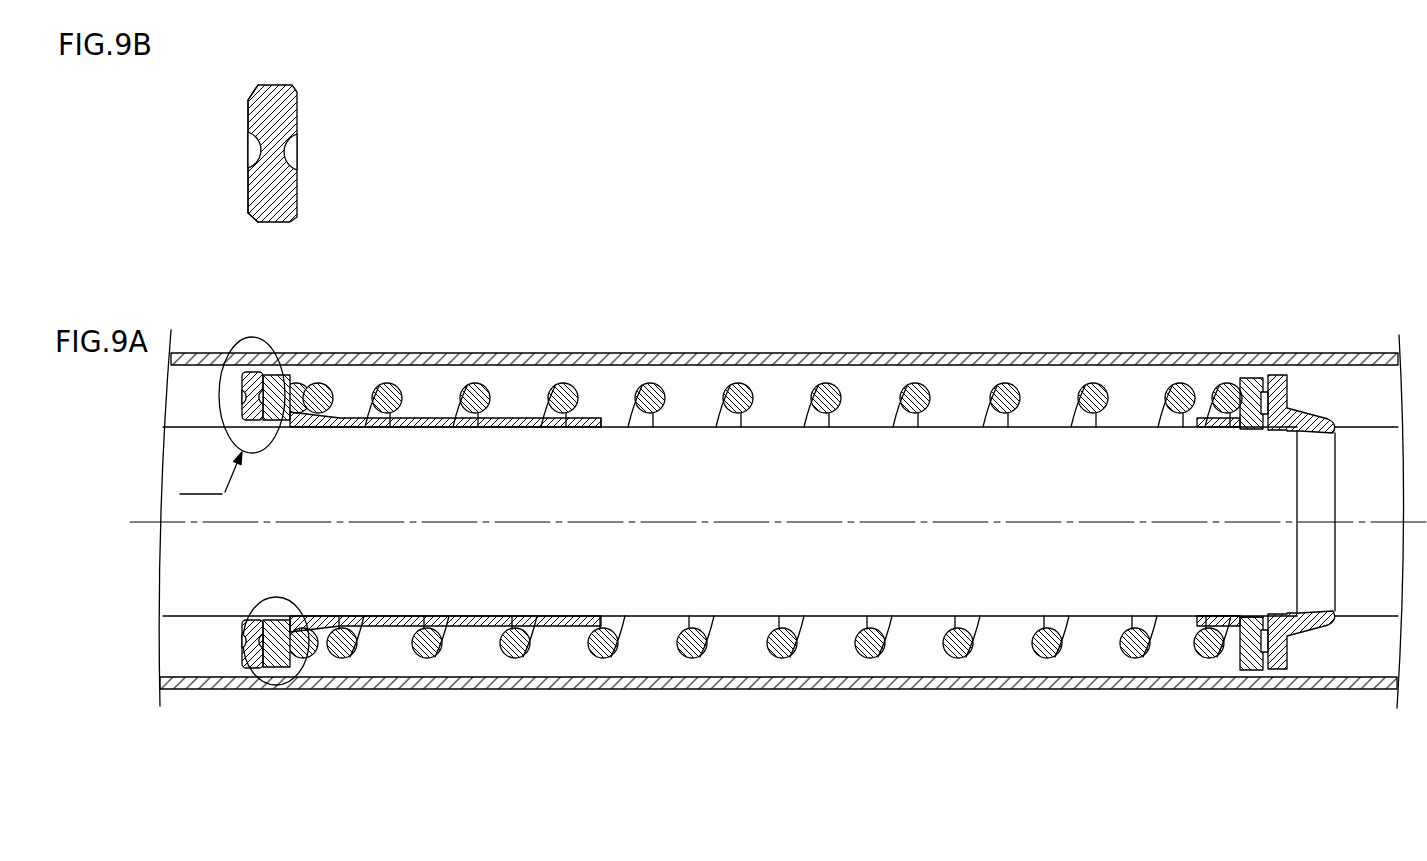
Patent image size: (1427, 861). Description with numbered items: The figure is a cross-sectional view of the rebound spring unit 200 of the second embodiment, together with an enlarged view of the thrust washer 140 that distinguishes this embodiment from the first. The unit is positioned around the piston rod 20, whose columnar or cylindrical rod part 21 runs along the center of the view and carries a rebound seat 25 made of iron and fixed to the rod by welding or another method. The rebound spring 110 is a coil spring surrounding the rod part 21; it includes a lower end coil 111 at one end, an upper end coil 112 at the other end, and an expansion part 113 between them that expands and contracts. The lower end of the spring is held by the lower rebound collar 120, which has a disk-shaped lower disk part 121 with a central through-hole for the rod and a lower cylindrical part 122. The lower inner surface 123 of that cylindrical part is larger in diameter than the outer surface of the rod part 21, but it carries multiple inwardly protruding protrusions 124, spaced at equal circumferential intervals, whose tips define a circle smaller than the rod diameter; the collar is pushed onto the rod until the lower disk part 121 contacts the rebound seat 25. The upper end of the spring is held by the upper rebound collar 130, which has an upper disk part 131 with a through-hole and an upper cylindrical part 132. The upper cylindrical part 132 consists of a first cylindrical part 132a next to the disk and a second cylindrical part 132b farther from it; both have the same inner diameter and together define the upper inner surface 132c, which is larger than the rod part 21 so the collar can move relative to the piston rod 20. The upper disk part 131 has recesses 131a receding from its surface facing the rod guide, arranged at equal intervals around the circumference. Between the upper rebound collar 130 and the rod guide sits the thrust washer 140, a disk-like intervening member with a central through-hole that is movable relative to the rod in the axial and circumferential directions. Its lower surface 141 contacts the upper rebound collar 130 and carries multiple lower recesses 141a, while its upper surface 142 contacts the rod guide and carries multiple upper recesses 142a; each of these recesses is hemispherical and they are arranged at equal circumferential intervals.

In FIG. 9A, the piston rod 20 is at (1370, 427).
In FIG. 9A, the rod part 21 is at (865, 427).
In FIG. 9A, the rebound seat 25 is at (1283, 373).
In FIG. 9A, the rebound spring 110 is at (902, 790).
In FIG. 9A, the lower end coil 111 is at (1216, 617).
In FIG. 9A, the upper end coil 112 is at (300, 656).
In FIG. 9A, the expansion part 113 is at (787, 658).
In FIG. 9A, the lower rebound collar 120 is at (1265, 264).
In FIG. 9A, the lower disk part 121 is at (1255, 377).
In FIG. 9A, the lower cylindrical part 122 is at (1207, 417).
In FIG. 9A, the lower inner surface 123 is at (1208, 623).
In FIG. 9A, the protrusions 124 is at (1237, 615).
In FIG. 9A, the upper rebound collar 130 is at (597, 226).
In FIG. 9A, the upper disk part 131 is at (268, 373).
In FIG. 9A, the recesses 131a is at (253, 651).
In FIG. 9A, the upper cylindrical part 132 is at (660, 271).
In FIG. 9A, the first cylindrical part 132a is at (338, 388).
In FIG. 9A, the second cylindrical part 132b is at (591, 418).
In FIG. 9A, the upper inner surface 132c is at (250, 628).
In FIG. 9A, the thrust washer 140 is at (240, 362).
In FIG. 9B, the lower surface 141 is at (298, 108).
In FIG. 9B, the lower recesses 141a is at (293, 150).
In FIG. 9B, the upper surface 142 is at (248, 108).
In FIG. 9B, the upper recesses 142a is at (255, 148).
In FIG. 9A, the rebound spring unit 200 is at (982, 234).